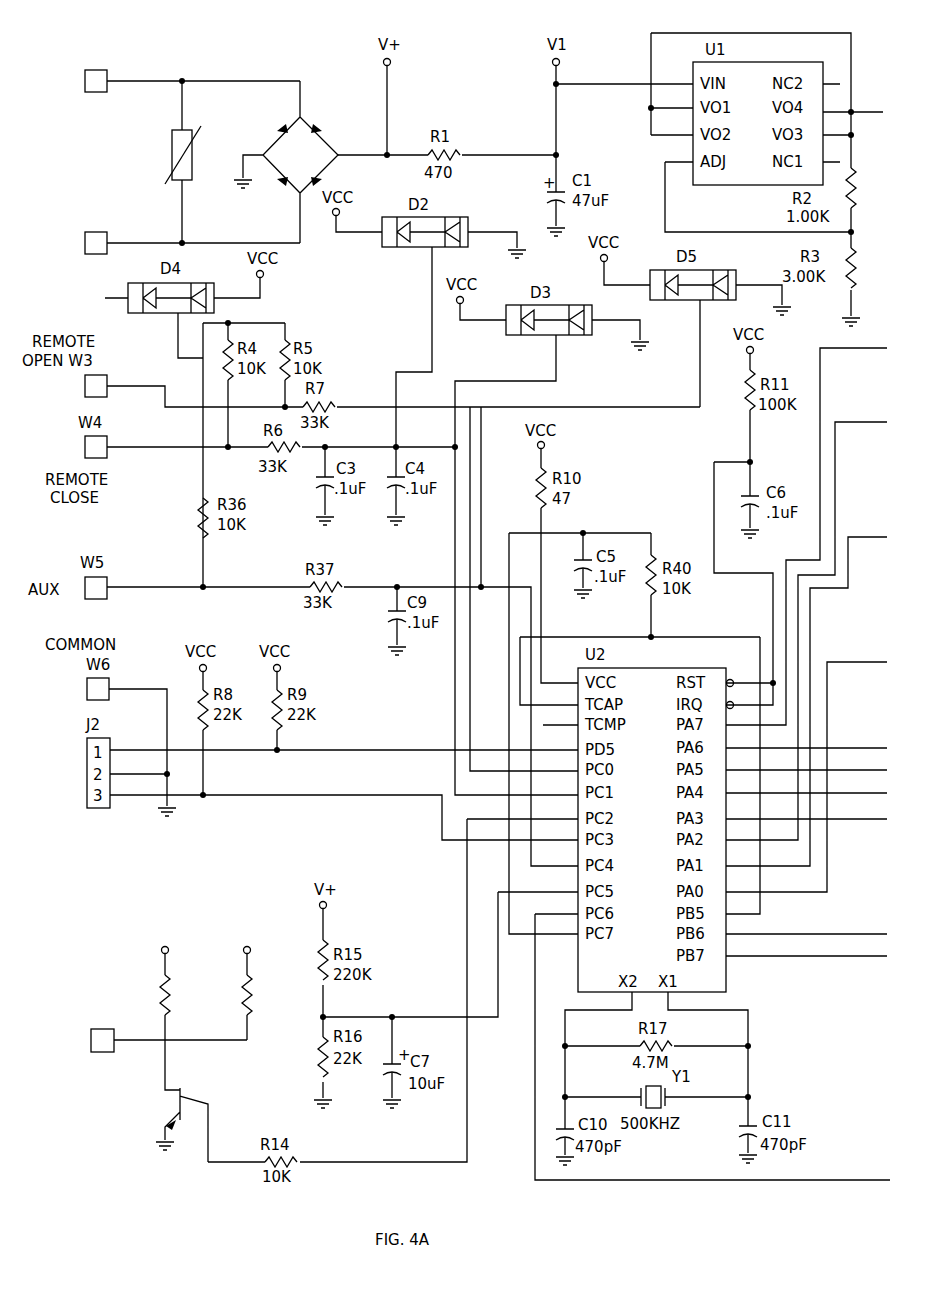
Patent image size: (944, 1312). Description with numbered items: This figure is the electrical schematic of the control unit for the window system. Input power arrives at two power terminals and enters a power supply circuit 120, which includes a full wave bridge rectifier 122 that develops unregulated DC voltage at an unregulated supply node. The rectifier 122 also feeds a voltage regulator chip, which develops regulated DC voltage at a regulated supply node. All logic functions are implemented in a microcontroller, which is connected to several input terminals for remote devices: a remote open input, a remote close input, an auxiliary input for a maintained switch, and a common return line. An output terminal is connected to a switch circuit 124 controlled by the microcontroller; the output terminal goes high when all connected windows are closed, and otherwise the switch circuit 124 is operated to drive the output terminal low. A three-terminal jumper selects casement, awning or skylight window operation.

The power supply circuit 120 is at (268, 55).
The full wave bridge rectifier 122 is at (305, 115).
The switch circuit 124 is at (128, 1101).